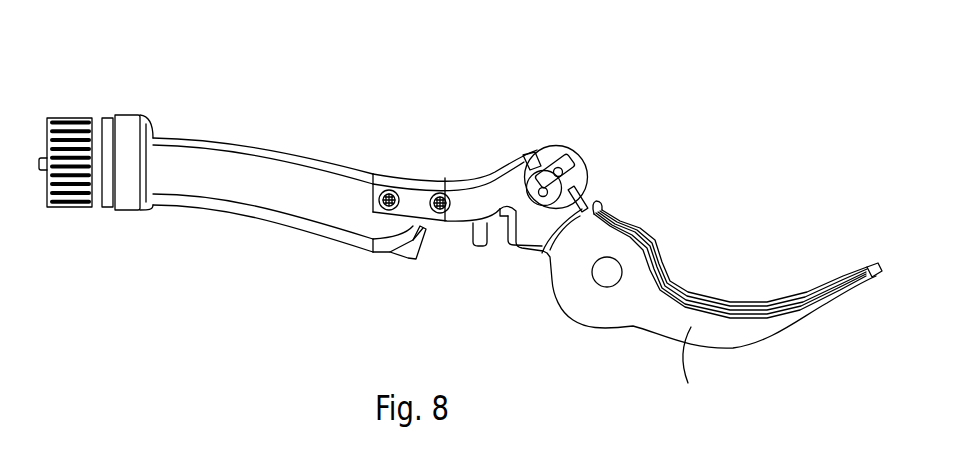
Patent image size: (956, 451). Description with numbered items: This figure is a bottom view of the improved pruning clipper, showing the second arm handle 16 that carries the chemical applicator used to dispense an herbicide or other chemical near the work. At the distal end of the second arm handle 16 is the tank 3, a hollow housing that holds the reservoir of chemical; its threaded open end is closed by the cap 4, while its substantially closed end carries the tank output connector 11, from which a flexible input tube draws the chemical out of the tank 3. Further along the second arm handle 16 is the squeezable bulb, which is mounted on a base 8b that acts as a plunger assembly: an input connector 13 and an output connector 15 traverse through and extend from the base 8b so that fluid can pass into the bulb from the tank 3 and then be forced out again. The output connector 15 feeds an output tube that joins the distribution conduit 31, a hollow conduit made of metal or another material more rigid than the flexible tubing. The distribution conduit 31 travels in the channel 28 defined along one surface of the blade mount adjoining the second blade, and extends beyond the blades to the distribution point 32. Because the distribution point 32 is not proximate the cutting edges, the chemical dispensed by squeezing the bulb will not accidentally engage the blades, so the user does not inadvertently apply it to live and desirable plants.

The second arm handle 16 is at (431, 82).
The cap 4 is at (75, 125).
The tank 3 is at (248, 177).
The tank output connector 11 is at (410, 262).
The base 8b is at (543, 150).
The output connector 15 is at (563, 167).
The input connector 13 is at (548, 191).
The channel 28 is at (671, 288).
The distribution conduit 31 is at (828, 304).
The distribution point 32 is at (872, 264).